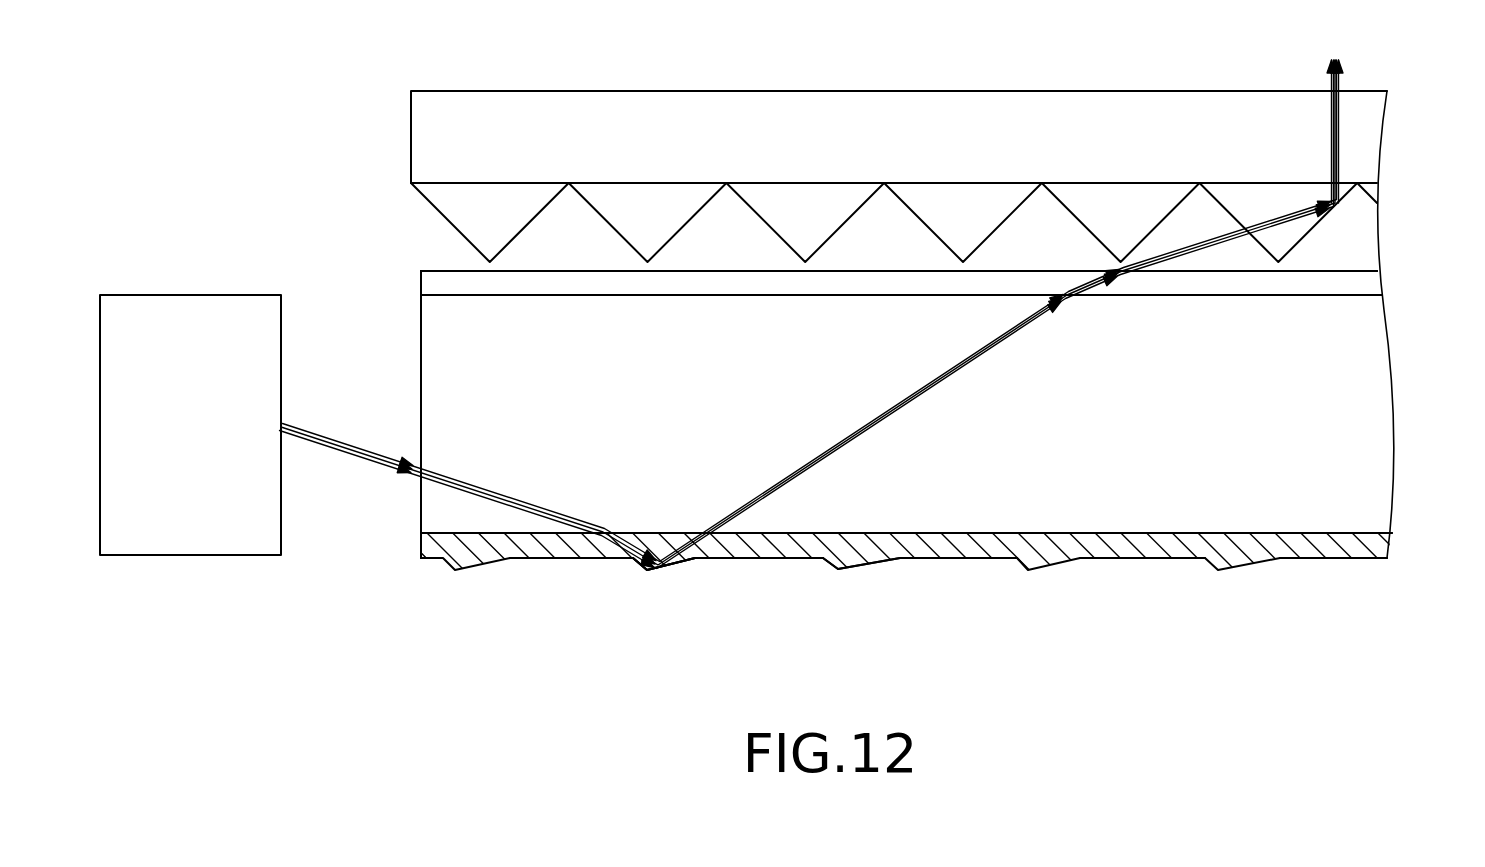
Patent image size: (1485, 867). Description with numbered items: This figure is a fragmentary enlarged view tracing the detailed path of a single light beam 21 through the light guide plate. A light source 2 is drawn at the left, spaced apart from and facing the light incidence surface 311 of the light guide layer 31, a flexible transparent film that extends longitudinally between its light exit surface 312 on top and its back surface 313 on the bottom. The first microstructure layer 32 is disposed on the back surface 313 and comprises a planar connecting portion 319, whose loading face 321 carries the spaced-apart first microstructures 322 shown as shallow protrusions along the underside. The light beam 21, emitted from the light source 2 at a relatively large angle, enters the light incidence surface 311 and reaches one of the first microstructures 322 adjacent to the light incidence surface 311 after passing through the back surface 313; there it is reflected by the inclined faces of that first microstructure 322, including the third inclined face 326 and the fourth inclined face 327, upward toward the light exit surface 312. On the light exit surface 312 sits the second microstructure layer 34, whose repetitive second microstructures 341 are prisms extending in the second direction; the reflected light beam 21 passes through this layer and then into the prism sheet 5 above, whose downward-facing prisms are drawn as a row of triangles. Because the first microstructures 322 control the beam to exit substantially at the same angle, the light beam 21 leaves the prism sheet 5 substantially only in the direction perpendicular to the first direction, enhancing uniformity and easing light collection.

The light source 2 is at (153, 295).
The light beam 21 is at (332, 443).
The prism sheet 5 is at (1165, 90).
The light guide layer 31 is at (1342, 423).
The light incidence surface 311 is at (420, 377).
The light exit surface 312 is at (1347, 295).
The back surface 313 is at (1320, 533).
The second microstructure layer 34 is at (1357, 262).
The second microstructures 341 is at (1360, 285).
The first microstructure layer 32 is at (909, 605).
The planar connecting portion 319 is at (760, 550).
The loading face 321 is at (793, 558).
The first microstructures 322 is at (650, 618).
The third inclined face 326 is at (642, 563).
The fourth inclined face 327 is at (687, 562).